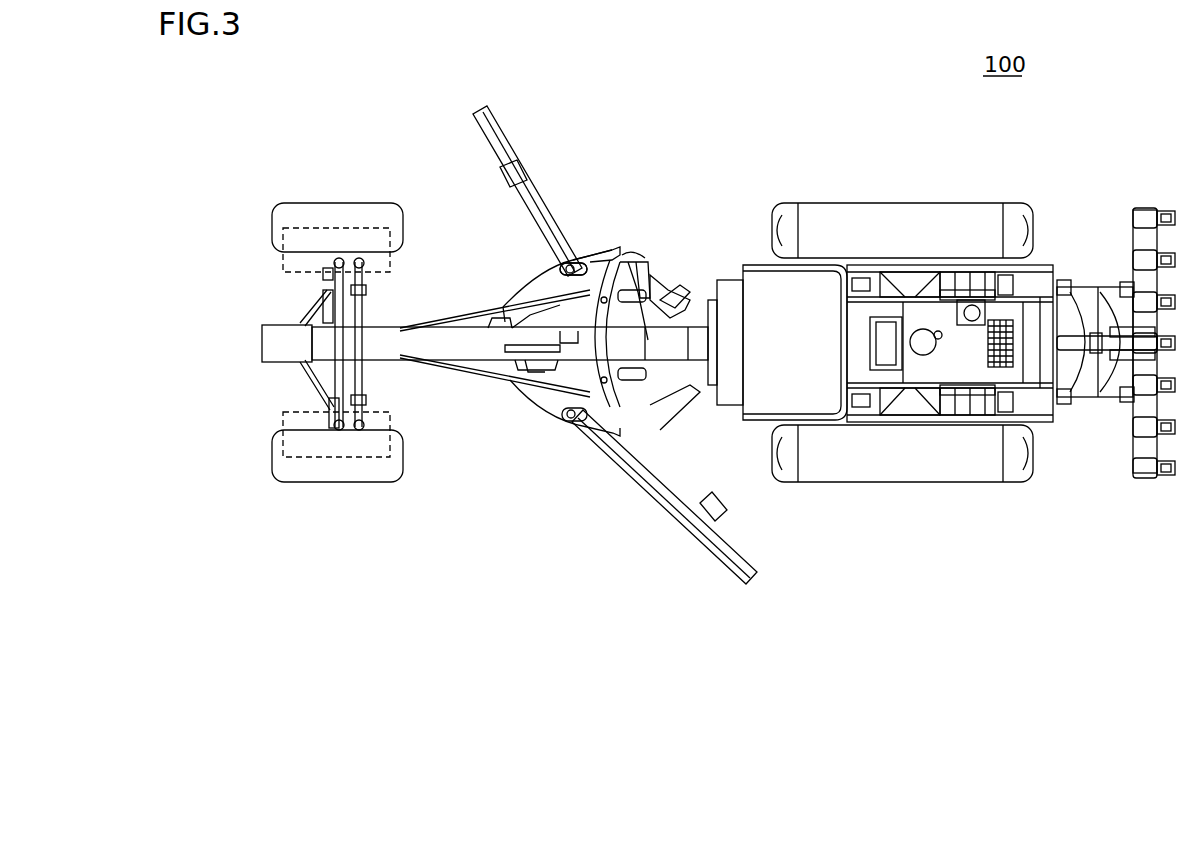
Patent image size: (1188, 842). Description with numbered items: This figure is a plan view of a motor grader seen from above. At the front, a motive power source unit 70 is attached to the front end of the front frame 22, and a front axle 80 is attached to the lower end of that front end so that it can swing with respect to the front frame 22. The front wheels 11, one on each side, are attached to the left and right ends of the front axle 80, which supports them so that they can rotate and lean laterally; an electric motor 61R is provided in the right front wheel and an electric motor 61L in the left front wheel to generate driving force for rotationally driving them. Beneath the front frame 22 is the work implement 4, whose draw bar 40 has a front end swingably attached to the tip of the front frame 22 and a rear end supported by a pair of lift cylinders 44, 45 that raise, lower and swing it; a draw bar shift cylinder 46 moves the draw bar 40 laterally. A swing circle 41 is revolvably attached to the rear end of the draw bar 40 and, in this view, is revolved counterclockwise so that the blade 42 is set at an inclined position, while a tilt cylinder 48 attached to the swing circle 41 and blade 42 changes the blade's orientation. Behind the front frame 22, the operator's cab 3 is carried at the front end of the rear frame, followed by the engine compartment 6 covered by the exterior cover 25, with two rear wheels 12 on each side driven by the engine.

The operator's cab 3 is at (746, 250).
The work implement 4 is at (581, 158).
The engine compartment 6 is at (987, 364).
The front wheel 11 is at (272, 220).
The rear wheel 12 is at (775, 220).
The front frame 22 is at (472, 350).
The exterior cover 25 is at (1050, 300).
The draw bar 40 is at (515, 372).
The swing circle 41 is at (547, 290).
The blade 42 is at (496, 156).
The lift cylinder 44 is at (577, 422).
The lift cylinder 45 is at (578, 262).
The draw bar shift cylinder 46 is at (633, 270).
The tilt cylinder 48 is at (668, 290).
The electric motor 61R is at (283, 262).
The electric motor 61L is at (283, 425).
The motive power source unit 70 is at (252, 347).
The front axle 80 is at (386, 386).